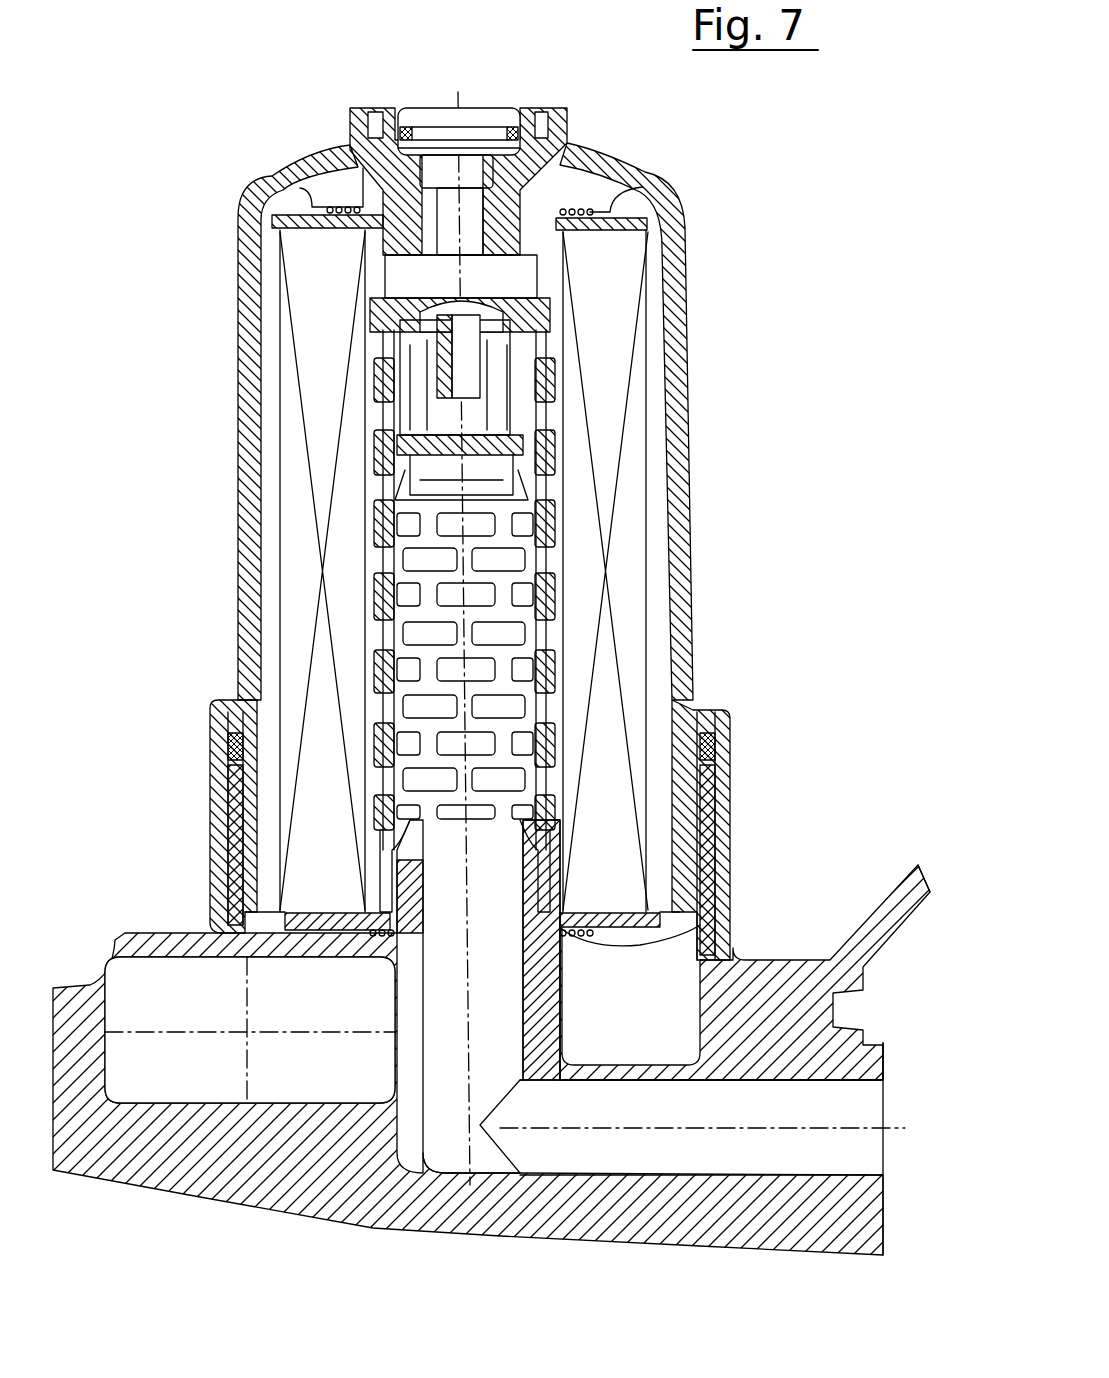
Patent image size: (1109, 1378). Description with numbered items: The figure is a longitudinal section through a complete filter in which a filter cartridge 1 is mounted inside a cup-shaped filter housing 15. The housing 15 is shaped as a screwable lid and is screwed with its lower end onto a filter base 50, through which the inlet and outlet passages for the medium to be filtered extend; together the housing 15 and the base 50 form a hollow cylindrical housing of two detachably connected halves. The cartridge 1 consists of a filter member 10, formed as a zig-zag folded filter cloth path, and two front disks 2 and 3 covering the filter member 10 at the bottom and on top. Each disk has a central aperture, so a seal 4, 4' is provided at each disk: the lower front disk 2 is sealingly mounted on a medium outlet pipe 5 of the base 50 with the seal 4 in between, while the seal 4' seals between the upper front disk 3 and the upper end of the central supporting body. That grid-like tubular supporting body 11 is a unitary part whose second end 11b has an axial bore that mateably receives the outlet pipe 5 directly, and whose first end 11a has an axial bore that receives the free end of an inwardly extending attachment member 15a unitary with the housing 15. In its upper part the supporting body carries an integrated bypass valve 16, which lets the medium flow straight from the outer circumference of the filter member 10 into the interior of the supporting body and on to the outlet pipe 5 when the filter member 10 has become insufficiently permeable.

The filter cartridge 1 is at (272, 505).
The lower front disk 2 is at (603, 923).
The upper front disk 3 is at (618, 233).
The seal 4 is at (578, 909).
The seal 4' is at (530, 175).
The medium outlet pipe 5 is at (407, 852).
The filter member 10 is at (630, 467).
The tubular supporting body 11 is at (545, 595).
The first end of supporting body 11a is at (350, 145).
The second end of supporting body 11b is at (383, 892).
The cup-shaped filter housing 15 is at (688, 320).
The inwardly extending attachment member 15a is at (355, 247).
The bypass valve 16 is at (392, 332).
The filter base 50 is at (362, 1160).